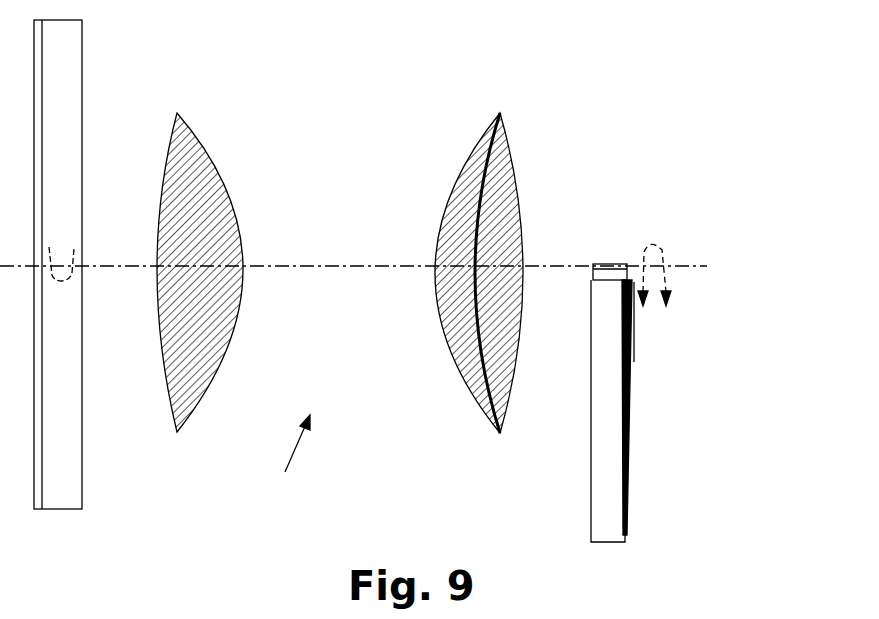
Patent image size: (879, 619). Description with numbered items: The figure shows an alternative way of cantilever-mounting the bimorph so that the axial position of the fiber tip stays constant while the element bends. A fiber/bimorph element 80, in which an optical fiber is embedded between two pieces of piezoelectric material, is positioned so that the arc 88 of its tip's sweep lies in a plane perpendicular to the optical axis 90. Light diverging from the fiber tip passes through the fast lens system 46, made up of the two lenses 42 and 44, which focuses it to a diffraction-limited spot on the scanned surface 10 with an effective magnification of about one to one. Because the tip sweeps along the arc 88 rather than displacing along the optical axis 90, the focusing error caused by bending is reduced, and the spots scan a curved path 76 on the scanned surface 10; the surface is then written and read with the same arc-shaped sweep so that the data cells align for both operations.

The scanned surface 10 is at (82, 50).
The curved path 76 is at (74, 262).
The lens 42 is at (224, 327).
The lens 44 is at (476, 333).
The optical axis 90 is at (262, 266).
The lens system 46 is at (294, 506).
The fiber/bimorph element 80 is at (650, 412).
The arc 88 is at (662, 252).